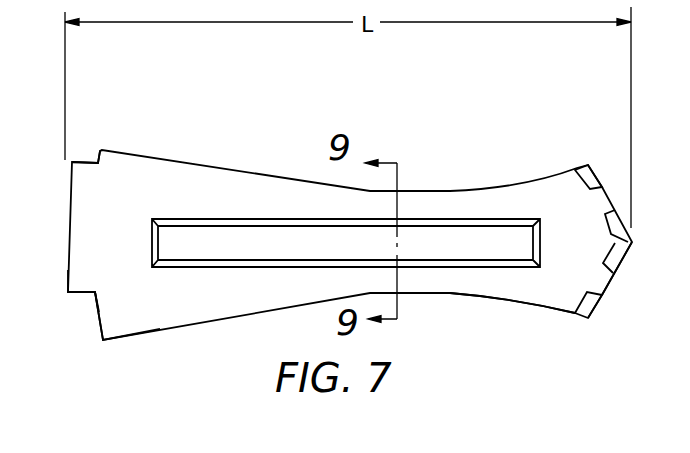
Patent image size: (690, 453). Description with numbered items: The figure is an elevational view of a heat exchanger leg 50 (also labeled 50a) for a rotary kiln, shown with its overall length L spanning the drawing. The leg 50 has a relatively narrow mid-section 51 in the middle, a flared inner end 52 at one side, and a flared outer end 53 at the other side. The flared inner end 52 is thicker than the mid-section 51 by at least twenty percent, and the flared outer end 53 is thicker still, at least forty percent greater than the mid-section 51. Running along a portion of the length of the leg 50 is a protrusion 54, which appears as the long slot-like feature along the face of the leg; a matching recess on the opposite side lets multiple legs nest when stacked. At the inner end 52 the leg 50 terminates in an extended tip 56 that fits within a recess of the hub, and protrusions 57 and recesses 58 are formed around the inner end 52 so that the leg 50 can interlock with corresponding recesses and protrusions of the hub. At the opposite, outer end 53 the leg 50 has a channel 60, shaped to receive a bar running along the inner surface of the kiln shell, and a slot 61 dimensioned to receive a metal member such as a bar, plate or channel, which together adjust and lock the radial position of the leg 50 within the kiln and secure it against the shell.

The leg 50 is at (370, 226).
The blade body (variant) 50a is at (370, 240).
The mid-section 51 is at (427, 295).
The flared inner end 52 is at (563, 311).
The flared outer end 53 is at (93, 342).
The protrusion 54 is at (240, 253).
The extended tip 56 is at (630, 243).
The protrusions 57 is at (601, 201).
The recesses 58 is at (612, 219).
The channel 60 is at (85, 314).
The slot 61 is at (85, 148).